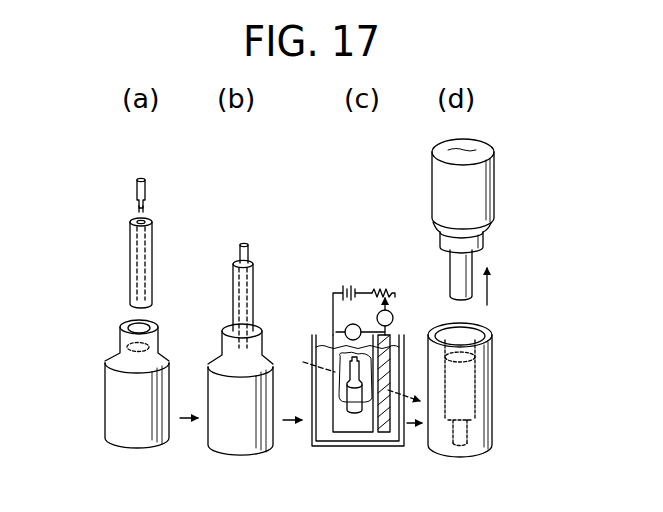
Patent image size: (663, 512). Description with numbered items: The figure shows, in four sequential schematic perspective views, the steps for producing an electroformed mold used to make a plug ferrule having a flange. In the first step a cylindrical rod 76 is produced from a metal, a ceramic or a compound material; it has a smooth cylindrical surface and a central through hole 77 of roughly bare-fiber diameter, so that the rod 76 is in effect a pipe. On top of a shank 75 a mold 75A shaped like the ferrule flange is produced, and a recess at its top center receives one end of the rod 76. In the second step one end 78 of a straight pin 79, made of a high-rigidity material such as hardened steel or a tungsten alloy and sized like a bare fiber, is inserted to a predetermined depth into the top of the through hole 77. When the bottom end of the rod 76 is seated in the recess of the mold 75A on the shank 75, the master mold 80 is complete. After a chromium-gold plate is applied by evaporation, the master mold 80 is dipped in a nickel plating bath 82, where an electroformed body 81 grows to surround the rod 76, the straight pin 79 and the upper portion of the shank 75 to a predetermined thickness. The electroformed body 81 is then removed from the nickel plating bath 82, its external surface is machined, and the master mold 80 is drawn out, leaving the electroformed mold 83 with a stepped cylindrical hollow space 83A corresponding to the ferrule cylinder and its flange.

The shank 75 is at (115, 392).
The mold 75A is at (120, 336).
The cylindrical rod 76 is at (130, 265).
The through hole 77 is at (136, 221).
The end of straight pin 78 is at (146, 206).
The straight pin 79 is at (135, 183).
The master mold 80 is at (212, 474).
The electroformed body 81 is at (345, 355).
The nickel plating bath 82 is at (358, 424).
The electroformed mold 83 is at (492, 418).
The stepped cylindrical hollow space 83A is at (490, 333).